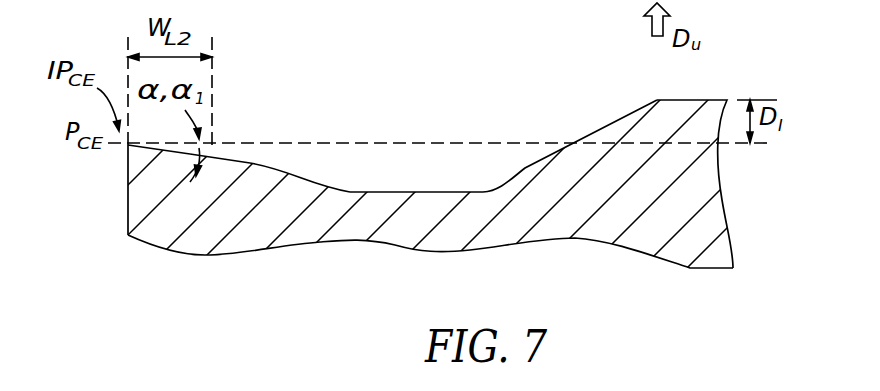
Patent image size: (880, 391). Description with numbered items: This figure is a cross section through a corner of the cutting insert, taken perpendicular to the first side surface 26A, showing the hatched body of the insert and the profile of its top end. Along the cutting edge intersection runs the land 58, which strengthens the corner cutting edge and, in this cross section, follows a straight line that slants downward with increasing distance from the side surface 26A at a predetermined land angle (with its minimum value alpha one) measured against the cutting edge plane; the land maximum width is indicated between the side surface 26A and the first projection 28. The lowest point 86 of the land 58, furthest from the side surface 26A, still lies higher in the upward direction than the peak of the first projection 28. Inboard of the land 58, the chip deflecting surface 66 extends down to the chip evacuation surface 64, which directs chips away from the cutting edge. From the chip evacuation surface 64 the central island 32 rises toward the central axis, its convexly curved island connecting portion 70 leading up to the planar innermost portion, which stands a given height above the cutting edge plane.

The first side surface 26A is at (128, 175).
The first projection 28 is at (303, 170).
The central island 32 is at (688, 100).
The land 58 is at (182, 157).
The chip evacuation surface 64 is at (392, 194).
The chip deflecting surface 66 is at (310, 129).
The island connecting portion 70 is at (600, 128).
The lowest point of the land 86 is at (208, 155).